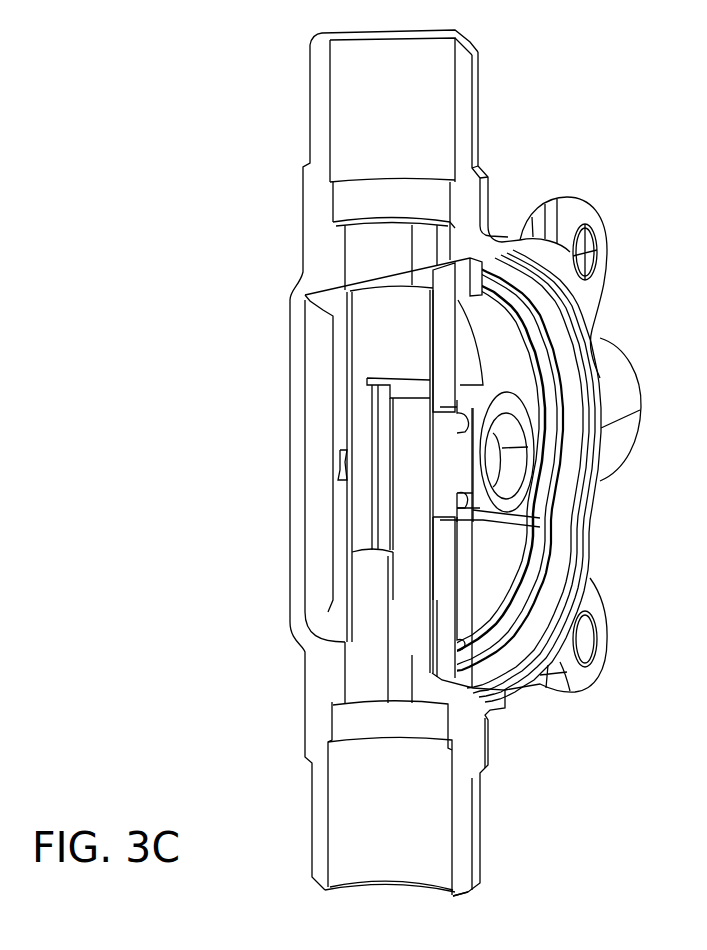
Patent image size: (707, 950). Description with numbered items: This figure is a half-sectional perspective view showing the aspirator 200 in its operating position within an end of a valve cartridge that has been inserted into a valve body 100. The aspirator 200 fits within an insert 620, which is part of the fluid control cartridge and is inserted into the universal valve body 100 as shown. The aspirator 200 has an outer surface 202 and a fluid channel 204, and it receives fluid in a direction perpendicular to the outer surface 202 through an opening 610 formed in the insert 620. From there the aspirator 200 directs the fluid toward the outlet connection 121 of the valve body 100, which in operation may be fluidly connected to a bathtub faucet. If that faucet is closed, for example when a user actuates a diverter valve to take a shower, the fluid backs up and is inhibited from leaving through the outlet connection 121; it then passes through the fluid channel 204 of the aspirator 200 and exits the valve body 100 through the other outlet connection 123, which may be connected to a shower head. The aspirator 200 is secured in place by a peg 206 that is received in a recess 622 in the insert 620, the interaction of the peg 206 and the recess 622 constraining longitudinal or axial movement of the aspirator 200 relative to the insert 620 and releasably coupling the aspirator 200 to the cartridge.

The valve body 100 is at (313, 695).
The outlet connection 121 is at (368, 812).
The outlet connection 123 is at (370, 121).
The aspirator 200 is at (369, 342).
The outer surface 202 is at (394, 523).
The fluid channel 204 is at (359, 500).
The peg 206 is at (341, 452).
The opening 610 is at (528, 512).
The insert 620 is at (453, 668).
The recess 622 is at (337, 470).